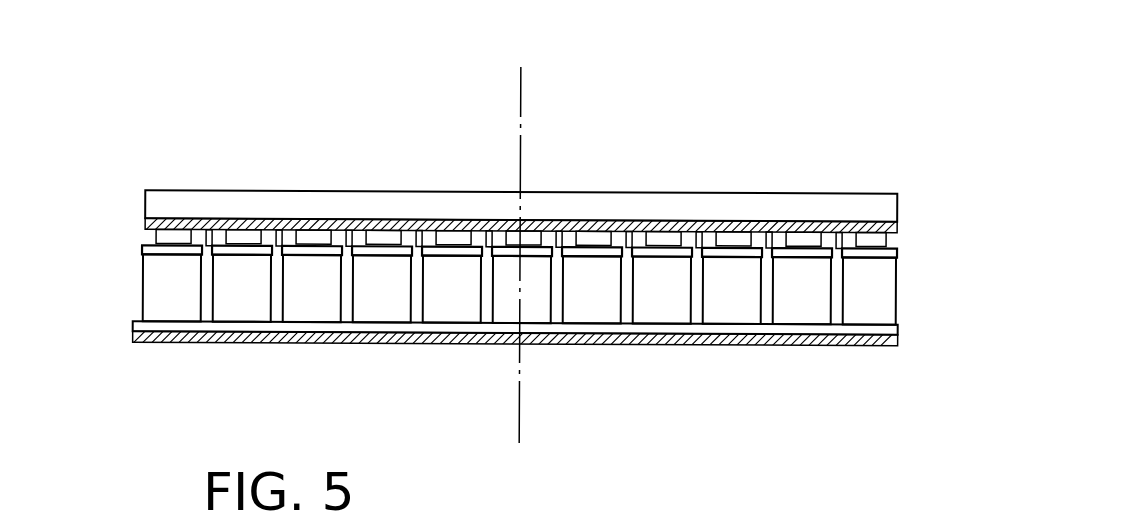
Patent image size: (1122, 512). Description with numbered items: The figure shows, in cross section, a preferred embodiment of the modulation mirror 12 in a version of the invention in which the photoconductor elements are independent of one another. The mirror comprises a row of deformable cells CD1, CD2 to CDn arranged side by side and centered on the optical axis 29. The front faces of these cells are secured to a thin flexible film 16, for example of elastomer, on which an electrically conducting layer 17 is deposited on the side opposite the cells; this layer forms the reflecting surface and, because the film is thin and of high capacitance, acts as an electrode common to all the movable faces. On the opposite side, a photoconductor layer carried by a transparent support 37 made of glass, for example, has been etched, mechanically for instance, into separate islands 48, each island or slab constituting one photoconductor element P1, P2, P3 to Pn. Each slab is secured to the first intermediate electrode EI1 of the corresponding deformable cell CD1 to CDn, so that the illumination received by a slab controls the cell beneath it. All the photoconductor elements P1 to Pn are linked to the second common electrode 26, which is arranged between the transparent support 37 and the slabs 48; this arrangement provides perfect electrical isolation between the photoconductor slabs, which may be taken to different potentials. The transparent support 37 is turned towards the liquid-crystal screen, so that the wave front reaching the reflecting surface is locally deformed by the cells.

The modulation mirror 12 is at (735, 43).
The optical axis 29 is at (523, 100).
The transparent support 37 is at (572, 197).
The second common electrode 26 is at (148, 224).
The islands 48 is at (218, 241).
The photoconductor element P1 is at (160, 237).
The photoconductor element P2 is at (222, 238).
The photoconductor element P3 is at (292, 236).
The photoconductor element Pn is at (878, 240).
The first intermediate electrode EI1 is at (147, 247).
The deformable cell CD1 is at (165, 283).
The deformable cell CD2 is at (241, 320).
The deformable cell CDn is at (875, 298).
The flexible film 16 is at (135, 325).
The electrically conducting layer 17 is at (135, 344).